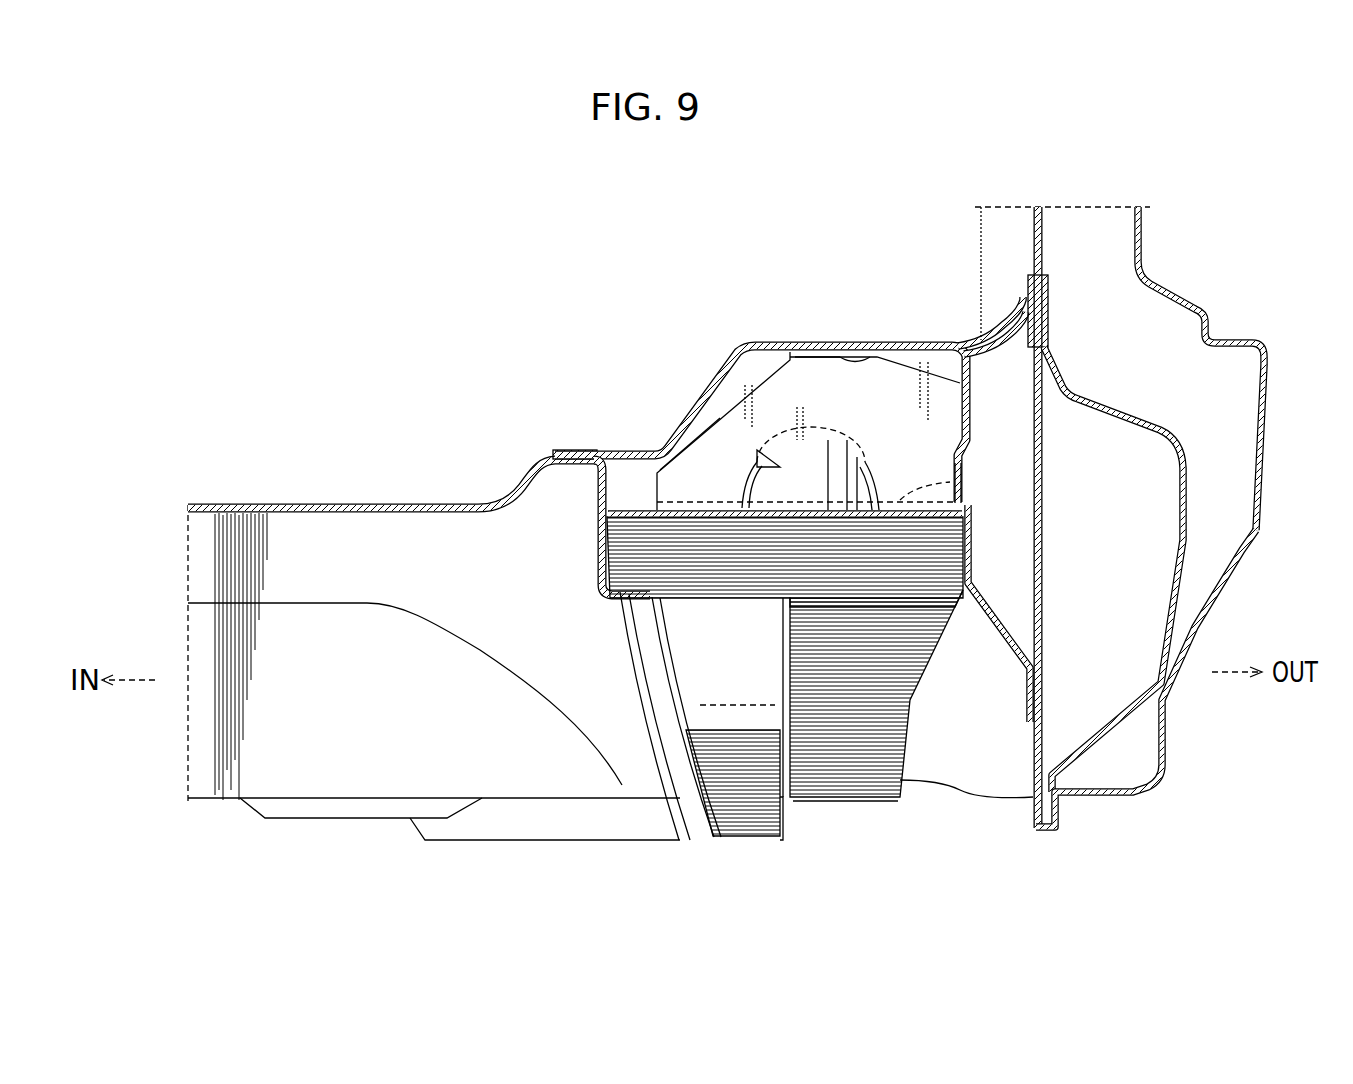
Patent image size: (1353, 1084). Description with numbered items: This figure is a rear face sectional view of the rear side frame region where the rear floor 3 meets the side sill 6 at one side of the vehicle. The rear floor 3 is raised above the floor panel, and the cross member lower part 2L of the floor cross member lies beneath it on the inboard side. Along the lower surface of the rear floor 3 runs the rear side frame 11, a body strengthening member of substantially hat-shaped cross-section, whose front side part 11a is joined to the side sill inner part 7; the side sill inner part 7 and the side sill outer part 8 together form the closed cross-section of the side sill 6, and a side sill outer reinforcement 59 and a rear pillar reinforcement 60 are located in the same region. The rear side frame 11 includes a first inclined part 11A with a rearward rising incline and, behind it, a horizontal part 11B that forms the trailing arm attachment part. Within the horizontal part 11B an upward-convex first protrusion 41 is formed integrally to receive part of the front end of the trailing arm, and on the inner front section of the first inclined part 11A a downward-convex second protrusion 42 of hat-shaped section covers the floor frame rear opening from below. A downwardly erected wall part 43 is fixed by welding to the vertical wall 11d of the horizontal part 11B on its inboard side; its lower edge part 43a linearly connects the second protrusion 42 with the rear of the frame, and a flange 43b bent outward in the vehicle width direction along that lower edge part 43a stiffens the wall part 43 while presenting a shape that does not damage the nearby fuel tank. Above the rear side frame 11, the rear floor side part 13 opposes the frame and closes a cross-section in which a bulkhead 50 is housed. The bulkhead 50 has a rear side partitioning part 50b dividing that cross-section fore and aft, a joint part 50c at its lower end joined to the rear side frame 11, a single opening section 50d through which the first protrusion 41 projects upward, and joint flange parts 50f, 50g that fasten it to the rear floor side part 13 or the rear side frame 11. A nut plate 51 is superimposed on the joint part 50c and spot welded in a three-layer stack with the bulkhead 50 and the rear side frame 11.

The cross member lower part 2L is at (324, 567).
The rear floor 3 is at (358, 504).
The side sill 6 is at (1186, 740).
The side sill inner part 7 is at (963, 545).
The side sill outer part 8 is at (1251, 468).
The rear side frame 11 is at (603, 557).
The first inclined part 11A is at (885, 741).
The horizontal part 11B is at (827, 519).
The front side part 11a is at (955, 485).
The vertical wall 11d is at (600, 490).
The rear floor side part 13 is at (760, 343).
The first protrusion 41 is at (833, 428).
The second protrusion 42 is at (757, 830).
The wall part 43 is at (600, 528).
The lower edge part 43a is at (628, 642).
The flange 43b is at (678, 658).
The bulkhead 50 is at (945, 358).
The rear side partitioning part 50b is at (822, 368).
The joint part 50c is at (966, 484).
The opening section 50d is at (770, 467).
The joint flange part 50f is at (858, 356).
The joint flange part 50g is at (710, 424).
The nut plate 51 is at (893, 503).
The side sill outer reinforcement 59 is at (1178, 554).
The rear pillar reinforcement 60 is at (1047, 595).